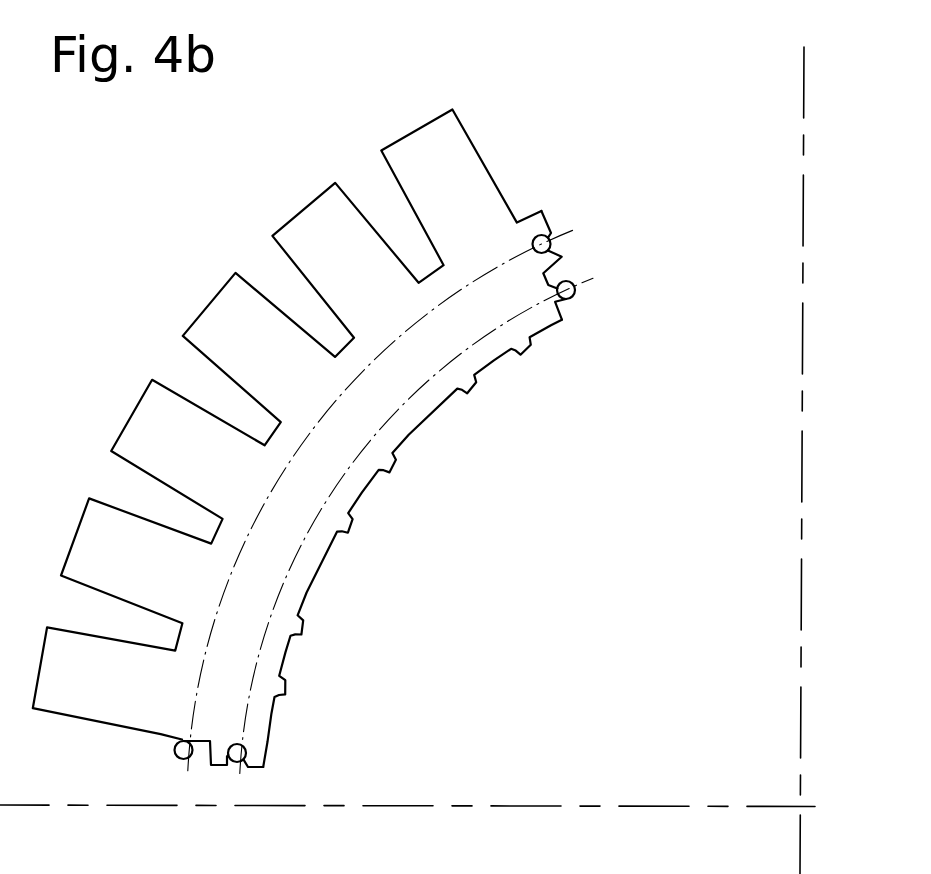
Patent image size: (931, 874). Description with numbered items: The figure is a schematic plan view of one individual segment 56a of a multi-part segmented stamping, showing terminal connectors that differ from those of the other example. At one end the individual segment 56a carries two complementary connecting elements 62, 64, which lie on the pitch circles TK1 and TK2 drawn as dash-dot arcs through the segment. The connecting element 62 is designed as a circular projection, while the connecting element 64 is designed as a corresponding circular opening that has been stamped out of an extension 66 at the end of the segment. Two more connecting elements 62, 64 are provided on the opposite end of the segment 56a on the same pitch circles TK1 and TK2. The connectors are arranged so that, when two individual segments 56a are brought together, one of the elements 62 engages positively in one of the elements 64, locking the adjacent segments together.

The individual segment 56a is at (122, 358).
The connecting element 62 is at (568, 312).
The connecting element 64 is at (548, 238).
The extension 66 is at (533, 211).
The pitch circle TK1 is at (590, 281).
The pitch circle TK2 is at (573, 233).